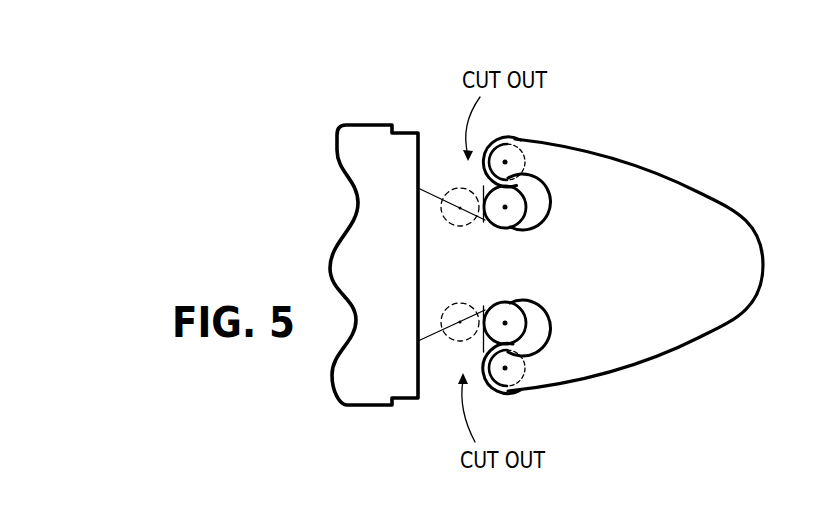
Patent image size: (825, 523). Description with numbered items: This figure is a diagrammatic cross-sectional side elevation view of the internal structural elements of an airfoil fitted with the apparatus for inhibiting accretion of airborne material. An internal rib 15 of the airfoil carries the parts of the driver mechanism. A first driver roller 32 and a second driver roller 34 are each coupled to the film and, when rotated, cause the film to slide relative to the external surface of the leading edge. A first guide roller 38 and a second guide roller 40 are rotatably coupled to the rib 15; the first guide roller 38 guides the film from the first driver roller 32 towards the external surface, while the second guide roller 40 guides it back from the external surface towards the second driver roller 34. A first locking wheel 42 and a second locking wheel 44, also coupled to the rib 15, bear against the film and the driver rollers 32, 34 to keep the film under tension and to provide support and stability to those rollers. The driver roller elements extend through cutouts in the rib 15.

The ribs 15 is at (688, 240).
The first driver roller 32 is at (509, 223).
The second driver roller 34 is at (515, 318).
The first guide roller 38 is at (483, 157).
The second guide roller 40 is at (480, 367).
The first locking wheel 42 is at (465, 192).
The second locking wheel 44 is at (464, 341).